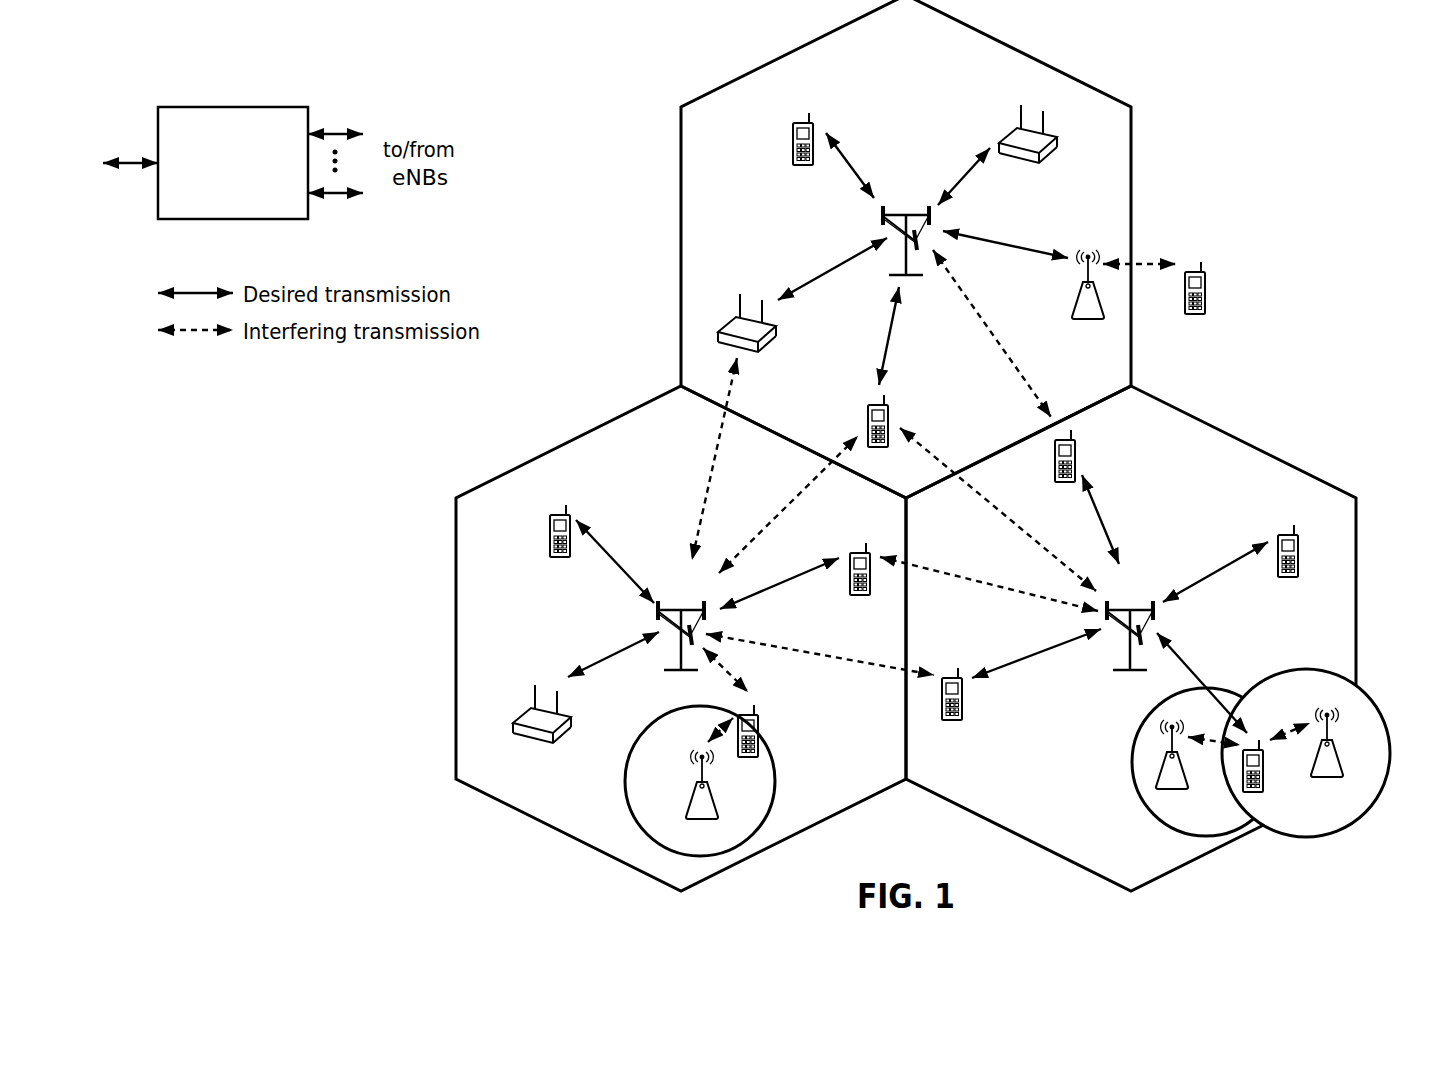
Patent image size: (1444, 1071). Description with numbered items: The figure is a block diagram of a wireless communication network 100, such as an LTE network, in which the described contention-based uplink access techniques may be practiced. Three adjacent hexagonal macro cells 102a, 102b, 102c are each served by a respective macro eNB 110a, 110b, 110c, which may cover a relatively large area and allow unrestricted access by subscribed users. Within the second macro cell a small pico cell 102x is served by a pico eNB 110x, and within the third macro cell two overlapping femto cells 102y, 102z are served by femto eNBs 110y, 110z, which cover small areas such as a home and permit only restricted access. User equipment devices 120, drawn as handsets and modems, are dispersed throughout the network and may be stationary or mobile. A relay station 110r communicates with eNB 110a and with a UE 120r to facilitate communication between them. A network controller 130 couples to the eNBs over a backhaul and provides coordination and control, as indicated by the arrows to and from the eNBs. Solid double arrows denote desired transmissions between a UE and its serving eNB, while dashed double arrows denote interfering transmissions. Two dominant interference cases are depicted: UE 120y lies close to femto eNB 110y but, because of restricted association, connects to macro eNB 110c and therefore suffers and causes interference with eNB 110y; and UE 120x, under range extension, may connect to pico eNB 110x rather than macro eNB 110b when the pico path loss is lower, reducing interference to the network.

The wireless communication network 100 is at (1288, 62).
The macro cell 102a is at (1018, 50).
The macro cell 102b is at (570, 442).
The macro cell 102c is at (1257, 427).
The pico cell 102x is at (647, 726).
The femto cell 102y is at (1143, 721).
The femto cell 102z is at (1303, 669).
The macro eNB 110a is at (899, 213).
The macro eNB 110b is at (677, 608).
The macro eNB 110c is at (1129, 608).
The relay station 110r is at (1078, 305).
The pico eNB 110x is at (716, 806).
The femto eNB 110y is at (1184, 779).
The femto eNB 110z is at (1339, 768).
The user equipment 120 is at (793, 132).
The UE 120r is at (1205, 309).
The UE 120x is at (772, 711).
The UE 120y is at (1243, 790).
The network controller 130 is at (228, 107).